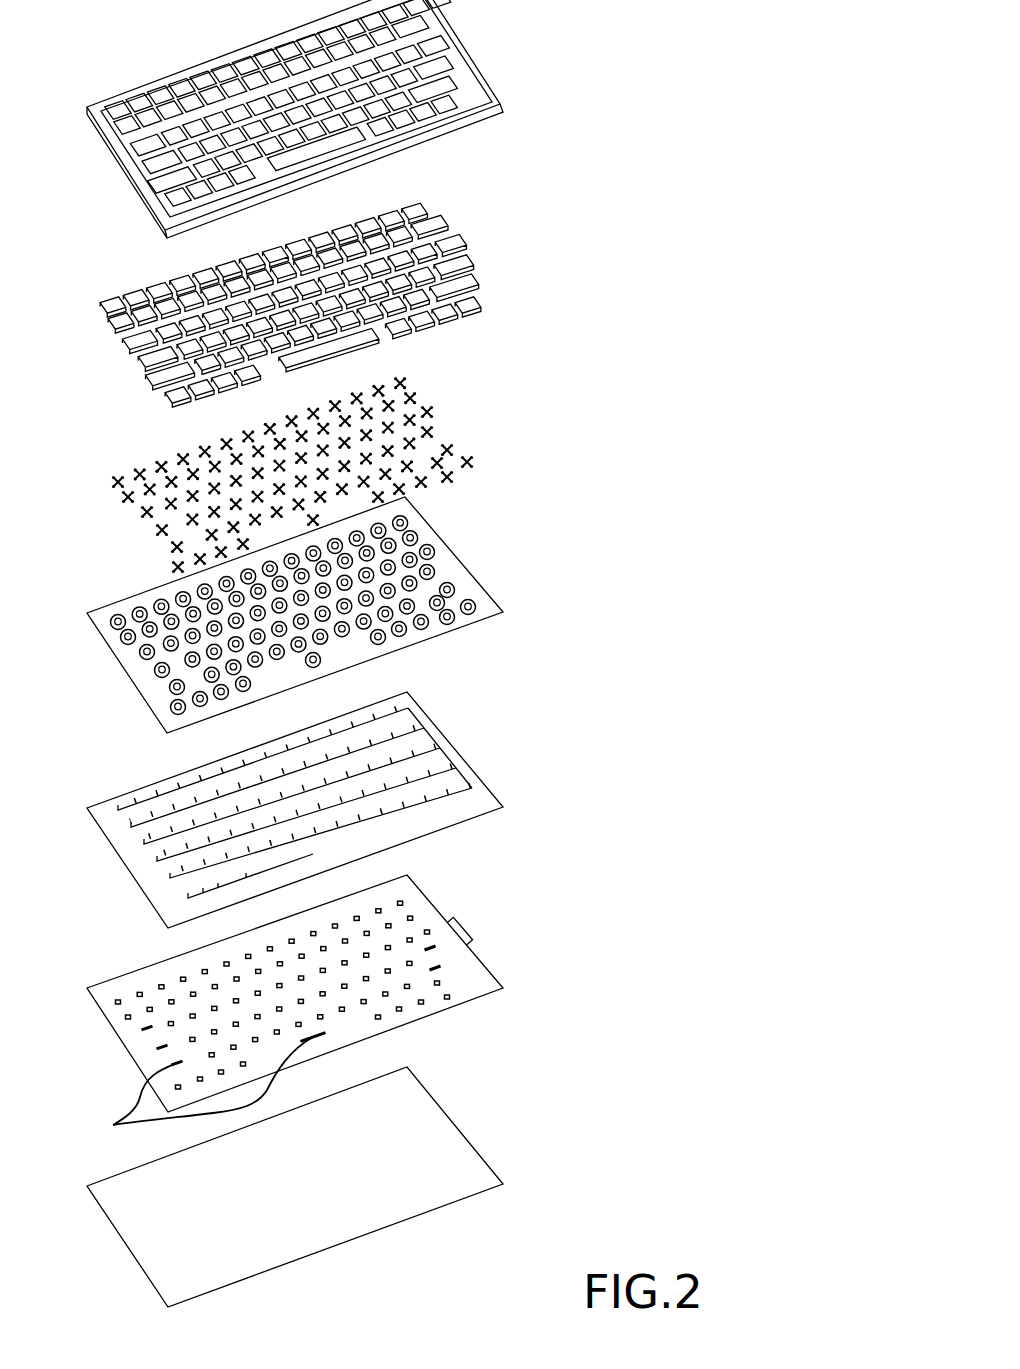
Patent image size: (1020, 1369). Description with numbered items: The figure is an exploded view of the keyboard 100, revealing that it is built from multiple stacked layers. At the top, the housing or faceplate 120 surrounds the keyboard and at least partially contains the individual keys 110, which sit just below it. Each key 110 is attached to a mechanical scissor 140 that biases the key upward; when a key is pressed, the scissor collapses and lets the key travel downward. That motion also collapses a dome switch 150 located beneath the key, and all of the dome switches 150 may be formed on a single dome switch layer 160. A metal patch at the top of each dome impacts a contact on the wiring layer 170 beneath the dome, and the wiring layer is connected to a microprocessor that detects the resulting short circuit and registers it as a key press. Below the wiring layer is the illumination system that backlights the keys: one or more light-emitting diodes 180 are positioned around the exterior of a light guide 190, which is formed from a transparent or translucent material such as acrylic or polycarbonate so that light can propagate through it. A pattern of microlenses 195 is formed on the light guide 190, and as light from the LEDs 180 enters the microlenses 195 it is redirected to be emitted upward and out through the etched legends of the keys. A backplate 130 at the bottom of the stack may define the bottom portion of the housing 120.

The keyboard 100 is at (690, 62).
The housing or faceplate 120 is at (478, 74).
The keys 110 is at (437, 242).
The mechanical scissor 140 is at (425, 403).
The dome switch layer 160 is at (433, 523).
The dome switch 150 is at (470, 605).
The wiring layer 170 is at (503, 806).
The light-emitting diodes (LEDs) 180 is at (461, 927).
The light guide 190 is at (503, 987).
The microlenses 195 is at (194, 1090).
The backplate 130 is at (433, 1091).